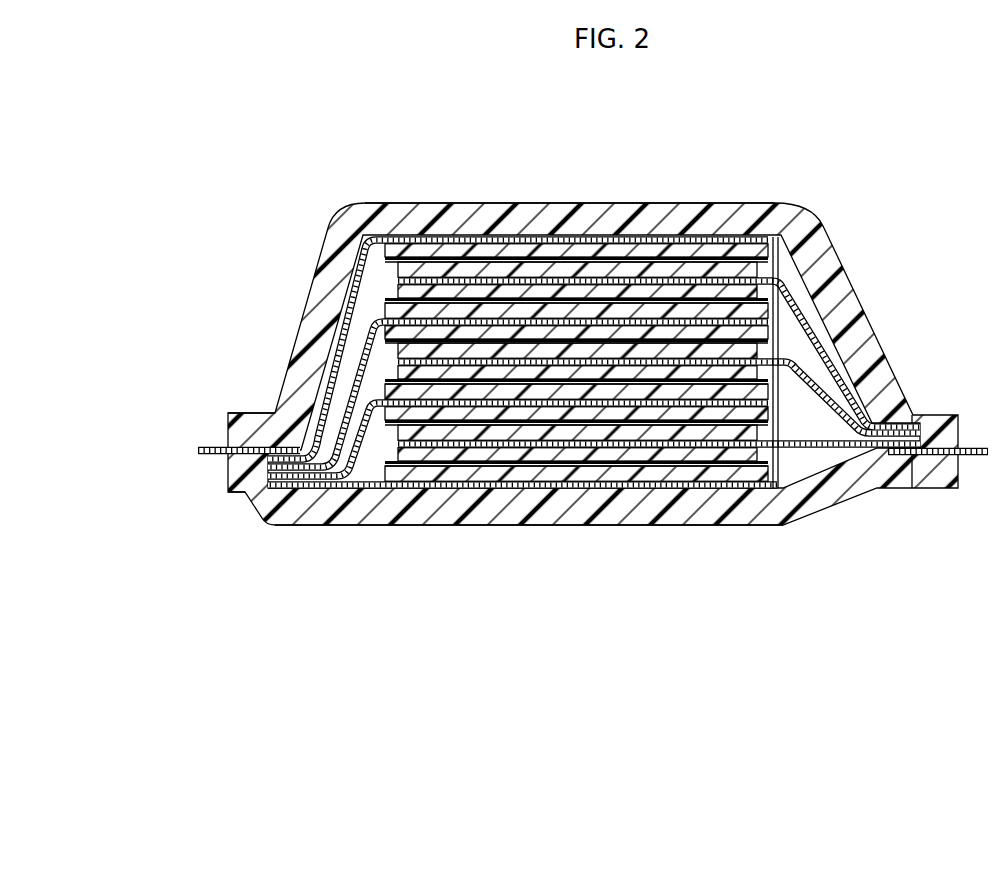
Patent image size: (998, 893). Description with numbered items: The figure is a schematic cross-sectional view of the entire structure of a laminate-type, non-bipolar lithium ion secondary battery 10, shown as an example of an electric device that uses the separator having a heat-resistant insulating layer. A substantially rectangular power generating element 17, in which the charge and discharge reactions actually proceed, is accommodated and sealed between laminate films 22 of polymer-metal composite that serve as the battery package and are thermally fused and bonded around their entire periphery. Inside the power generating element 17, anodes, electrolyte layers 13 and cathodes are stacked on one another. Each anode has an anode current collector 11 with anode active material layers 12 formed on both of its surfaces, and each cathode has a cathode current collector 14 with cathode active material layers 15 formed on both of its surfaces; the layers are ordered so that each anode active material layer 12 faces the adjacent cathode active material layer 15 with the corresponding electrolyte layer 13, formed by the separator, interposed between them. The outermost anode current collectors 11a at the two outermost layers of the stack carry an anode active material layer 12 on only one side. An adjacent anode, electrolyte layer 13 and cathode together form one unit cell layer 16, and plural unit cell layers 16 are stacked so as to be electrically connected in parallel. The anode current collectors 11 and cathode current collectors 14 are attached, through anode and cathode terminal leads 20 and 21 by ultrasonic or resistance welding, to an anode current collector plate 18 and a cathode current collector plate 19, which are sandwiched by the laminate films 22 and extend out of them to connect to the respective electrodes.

The lithium ion secondary battery 10 is at (285, 183).
The anode current collector 11 is at (633, 320).
The outermost anode current collector 11a is at (710, 240).
The anode active material layer 12 is at (426, 250).
The electrolyte layer 13 is at (468, 265).
The cathode current collector 14 is at (573, 282).
The cathode active material layer 15 is at (504, 272).
The unit cell layer 16 is at (516, 156).
The power generating element 17 is at (778, 402).
The anode current collector plate 18 is at (216, 446).
The cathode current collector plate 19 is at (966, 447).
The anode terminal lead 20 is at (346, 306).
The cathode terminal lead 21 is at (821, 318).
The laminate film 22 is at (940, 414).